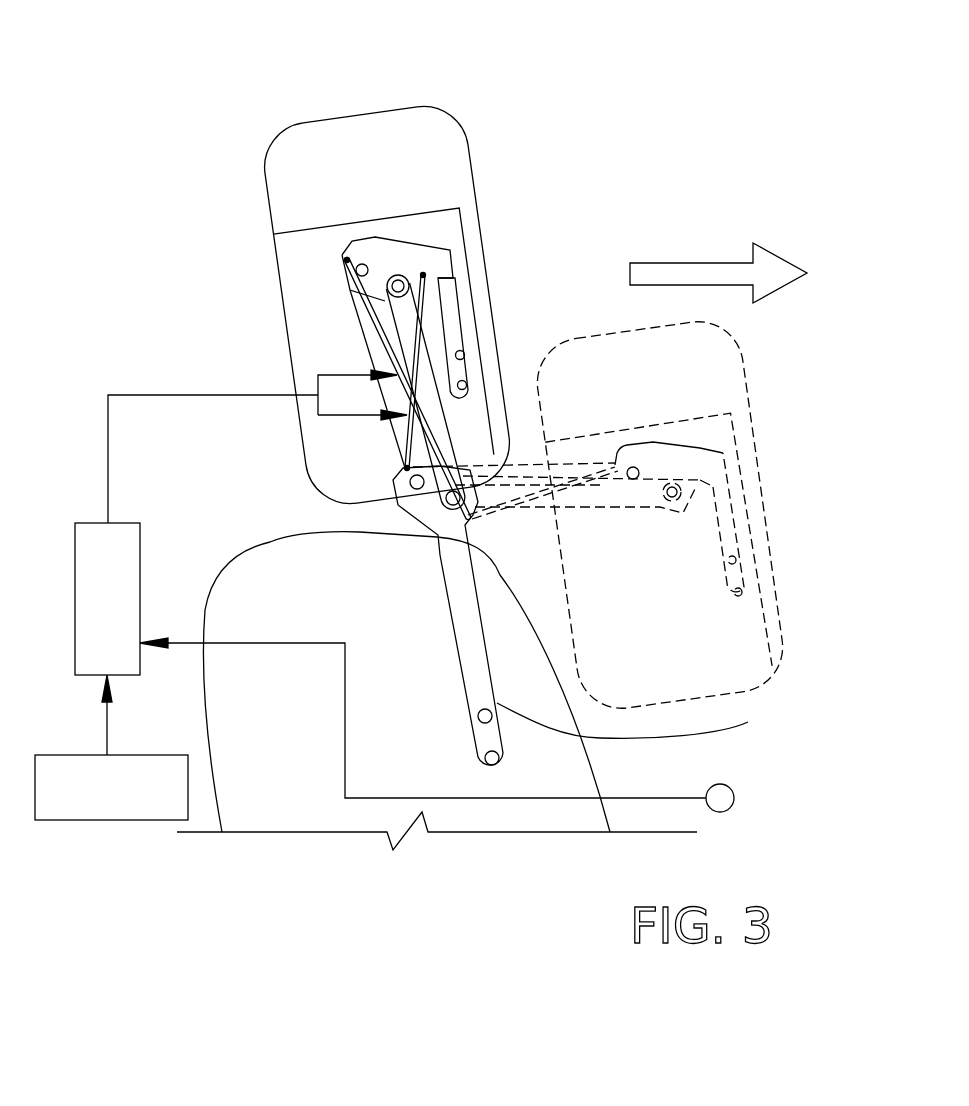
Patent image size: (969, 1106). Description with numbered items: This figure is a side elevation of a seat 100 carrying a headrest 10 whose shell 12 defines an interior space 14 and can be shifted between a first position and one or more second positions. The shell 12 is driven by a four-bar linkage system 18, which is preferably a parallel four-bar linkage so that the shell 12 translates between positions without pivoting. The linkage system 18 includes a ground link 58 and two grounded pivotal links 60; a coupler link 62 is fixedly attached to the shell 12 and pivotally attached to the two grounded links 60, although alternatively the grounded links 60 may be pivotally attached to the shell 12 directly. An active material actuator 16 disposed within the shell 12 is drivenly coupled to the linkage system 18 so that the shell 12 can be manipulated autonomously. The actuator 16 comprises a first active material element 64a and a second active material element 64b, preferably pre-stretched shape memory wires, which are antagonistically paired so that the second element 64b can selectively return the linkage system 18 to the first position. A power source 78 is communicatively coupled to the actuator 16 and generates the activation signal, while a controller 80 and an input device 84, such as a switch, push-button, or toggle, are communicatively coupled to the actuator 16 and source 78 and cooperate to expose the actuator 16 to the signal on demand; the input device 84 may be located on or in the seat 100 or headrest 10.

The headrest 10 is at (226, 101).
The shell 12 is at (266, 190).
The interior space 14 is at (327, 288).
The active material actuator 16 is at (378, 432).
The linkage system 18 is at (327, 310).
The ground link 58 is at (640, 720).
The grounded links 60 is at (363, 322).
The coupler link 62 is at (458, 291).
The first active material element 64a is at (383, 342).
The second active material element 64b is at (417, 455).
The power source 78 is at (121, 803).
The controller 80 is at (123, 625).
The input device 84 is at (718, 784).
The seat 100 is at (243, 561).